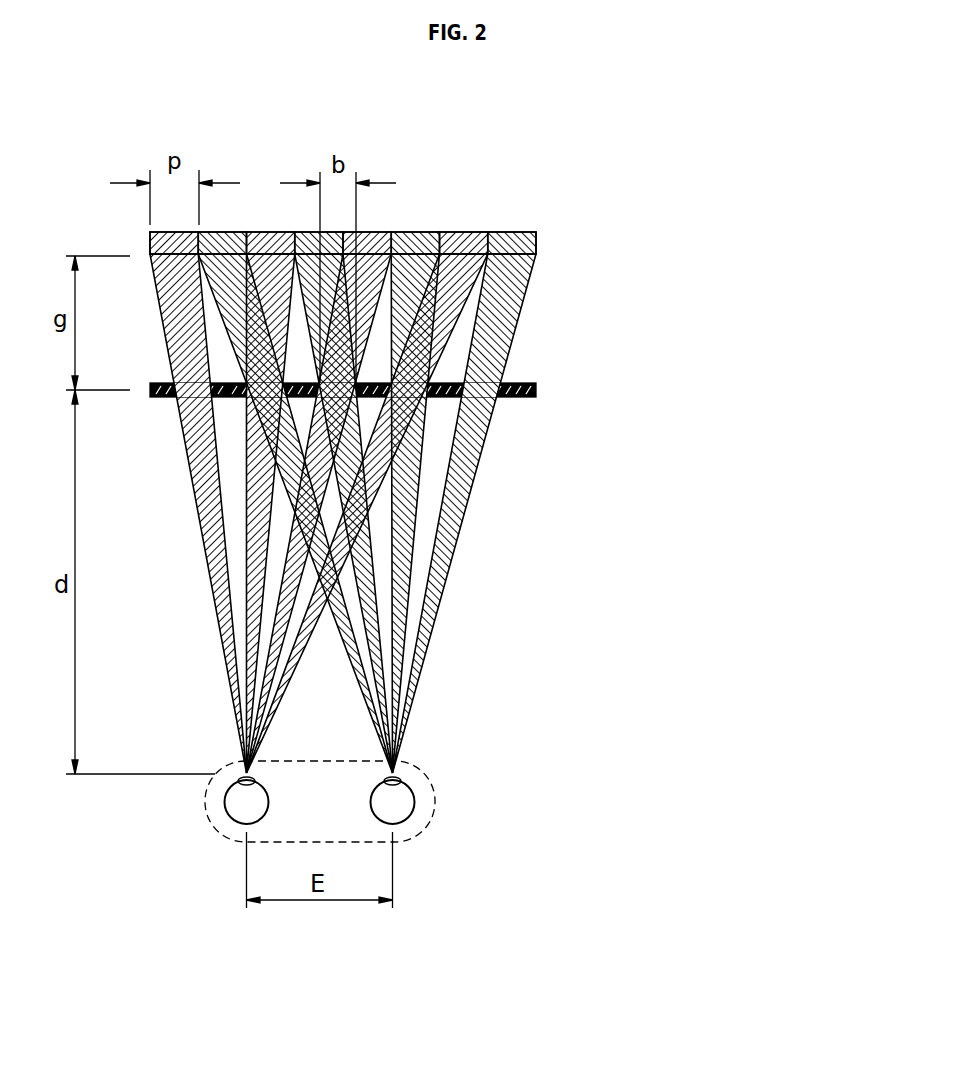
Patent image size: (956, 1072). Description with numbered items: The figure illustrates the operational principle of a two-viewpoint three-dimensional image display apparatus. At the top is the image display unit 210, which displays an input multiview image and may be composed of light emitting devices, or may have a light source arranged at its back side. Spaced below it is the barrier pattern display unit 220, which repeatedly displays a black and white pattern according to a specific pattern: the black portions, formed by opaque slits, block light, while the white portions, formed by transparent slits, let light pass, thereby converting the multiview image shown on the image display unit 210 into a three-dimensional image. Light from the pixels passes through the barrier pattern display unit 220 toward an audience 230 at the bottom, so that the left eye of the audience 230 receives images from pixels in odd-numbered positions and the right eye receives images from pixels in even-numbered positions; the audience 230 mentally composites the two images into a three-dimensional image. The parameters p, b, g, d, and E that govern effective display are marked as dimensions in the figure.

The image display unit 210 is at (536, 243).
The barrier pattern display unit 220 is at (536, 392).
The audience 230 is at (423, 777).